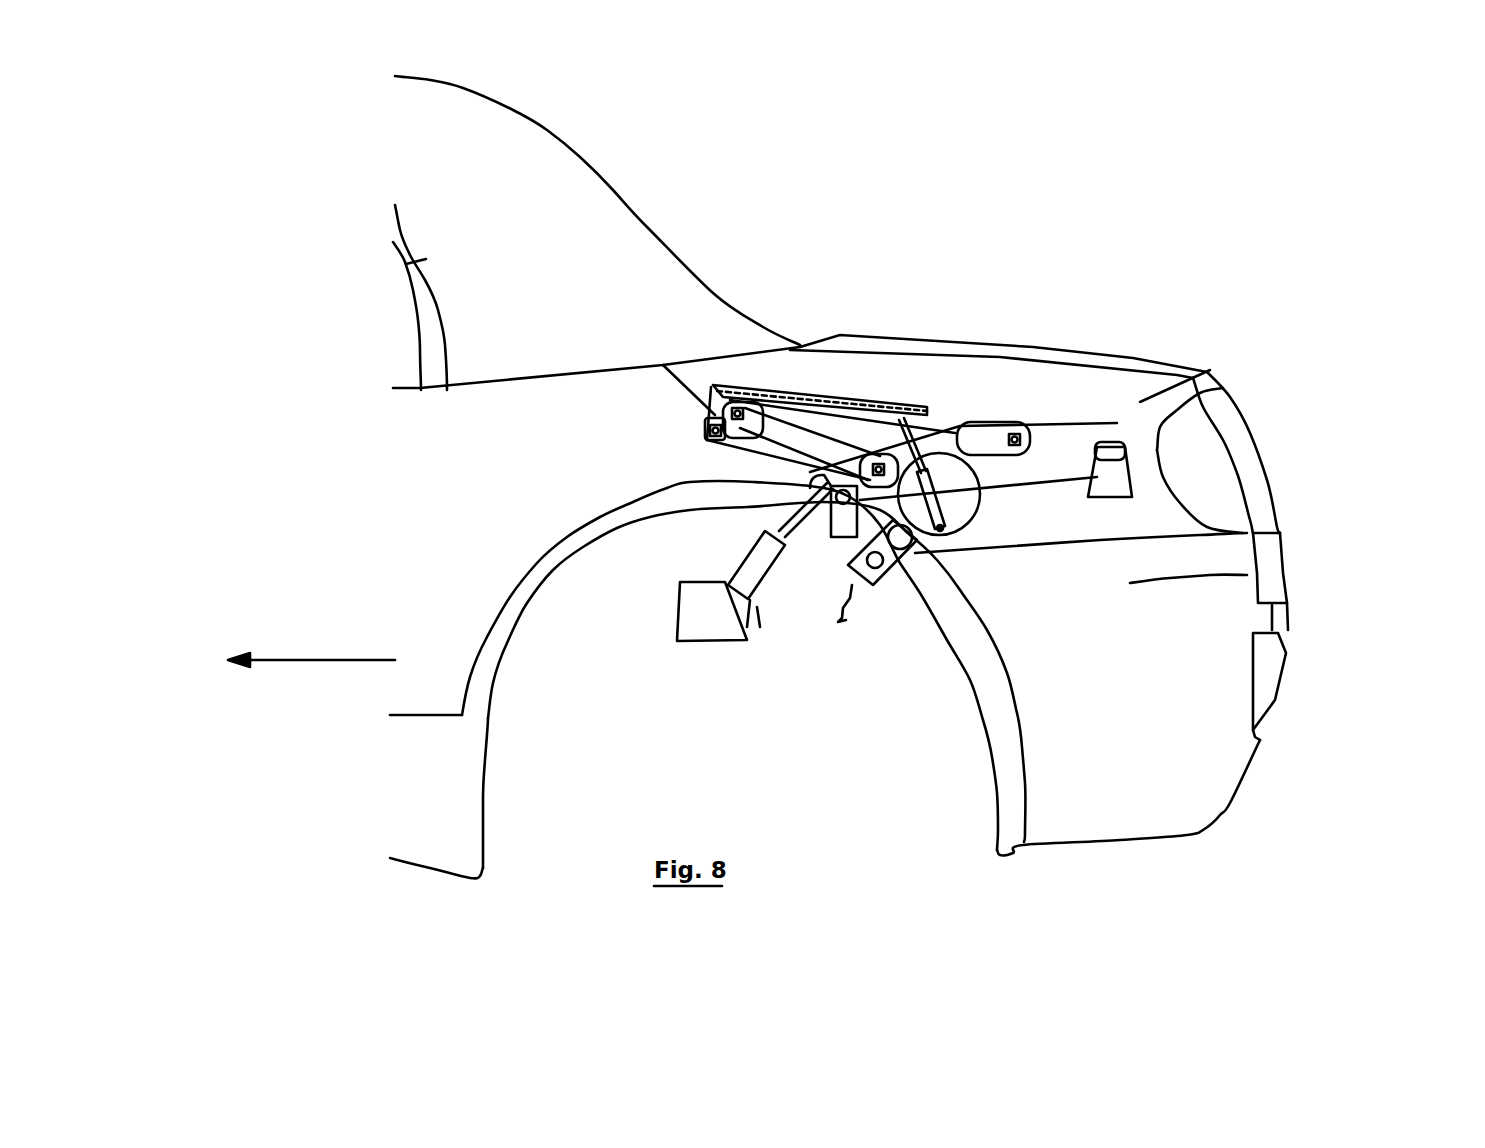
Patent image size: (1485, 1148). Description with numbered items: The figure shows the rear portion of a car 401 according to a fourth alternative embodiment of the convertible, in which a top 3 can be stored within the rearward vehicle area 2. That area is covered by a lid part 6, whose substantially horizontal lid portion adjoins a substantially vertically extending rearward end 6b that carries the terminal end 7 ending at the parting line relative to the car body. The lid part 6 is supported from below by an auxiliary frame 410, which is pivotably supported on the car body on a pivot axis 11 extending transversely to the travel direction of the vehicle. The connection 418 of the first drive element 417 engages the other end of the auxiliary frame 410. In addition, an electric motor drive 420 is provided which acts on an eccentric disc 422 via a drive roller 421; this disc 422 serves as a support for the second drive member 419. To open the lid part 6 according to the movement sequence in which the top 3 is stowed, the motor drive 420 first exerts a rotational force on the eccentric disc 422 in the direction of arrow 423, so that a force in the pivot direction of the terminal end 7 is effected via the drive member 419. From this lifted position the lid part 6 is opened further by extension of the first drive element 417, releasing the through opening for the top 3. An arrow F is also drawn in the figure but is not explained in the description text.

The rearward vehicle area 2 is at (1172, 296).
The top 3 is at (623, 227).
The lid part 6 is at (1033, 346).
The rearward end 6b is at (1265, 447).
The terminal end 7 is at (1296, 561).
The pivot axis 11 is at (1112, 457).
The car 401 is at (850, 236).
The auxiliary frame 410 is at (1070, 447).
The first drive element 417 is at (780, 527).
The connection 418 is at (700, 637).
The second drive member 419 is at (975, 552).
The electric motor drive 420 is at (875, 556).
The drive roller 421 is at (965, 530).
The eccentric disc 422 is at (973, 497).
The arrow 423 is at (949, 490).
The direction of travel F is at (298, 662).